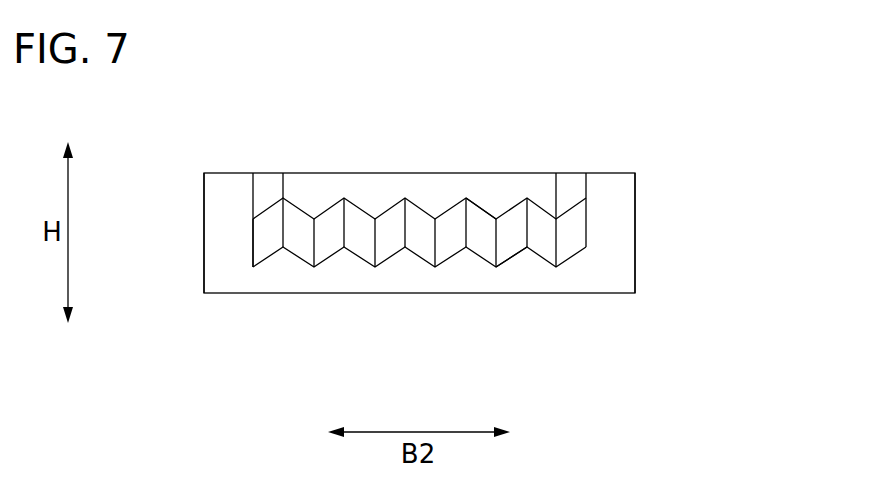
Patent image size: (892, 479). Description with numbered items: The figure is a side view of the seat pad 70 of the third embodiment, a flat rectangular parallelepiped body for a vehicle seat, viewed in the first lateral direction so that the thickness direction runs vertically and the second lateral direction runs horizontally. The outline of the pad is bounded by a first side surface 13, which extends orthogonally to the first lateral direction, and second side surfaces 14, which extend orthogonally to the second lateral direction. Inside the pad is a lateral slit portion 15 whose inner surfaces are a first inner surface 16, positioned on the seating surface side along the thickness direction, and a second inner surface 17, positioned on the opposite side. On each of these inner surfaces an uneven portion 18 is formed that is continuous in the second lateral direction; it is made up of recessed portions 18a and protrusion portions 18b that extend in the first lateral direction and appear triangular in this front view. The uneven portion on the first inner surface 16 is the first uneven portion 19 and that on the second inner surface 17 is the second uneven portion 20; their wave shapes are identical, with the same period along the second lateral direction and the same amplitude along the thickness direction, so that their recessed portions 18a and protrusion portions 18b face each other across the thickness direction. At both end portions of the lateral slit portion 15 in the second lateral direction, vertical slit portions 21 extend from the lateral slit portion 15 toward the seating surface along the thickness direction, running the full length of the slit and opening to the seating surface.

The seat pad 70 is at (648, 121).
The first side surface 13 is at (619, 217).
The second side surface 14 is at (203, 245).
The lateral slit portion 15 is at (248, 235).
The first inner surface 16 is at (488, 214).
The second inner surface 17 is at (497, 250).
The uneven portion 18 is at (419, 233).
The recessed portion 18a is at (340, 208).
The protrusion portion 18b is at (412, 213).
The first uneven portion 19 is at (313, 107).
The second uneven portion 20 is at (288, 356).
The vertical slit portion 21 is at (266, 168).